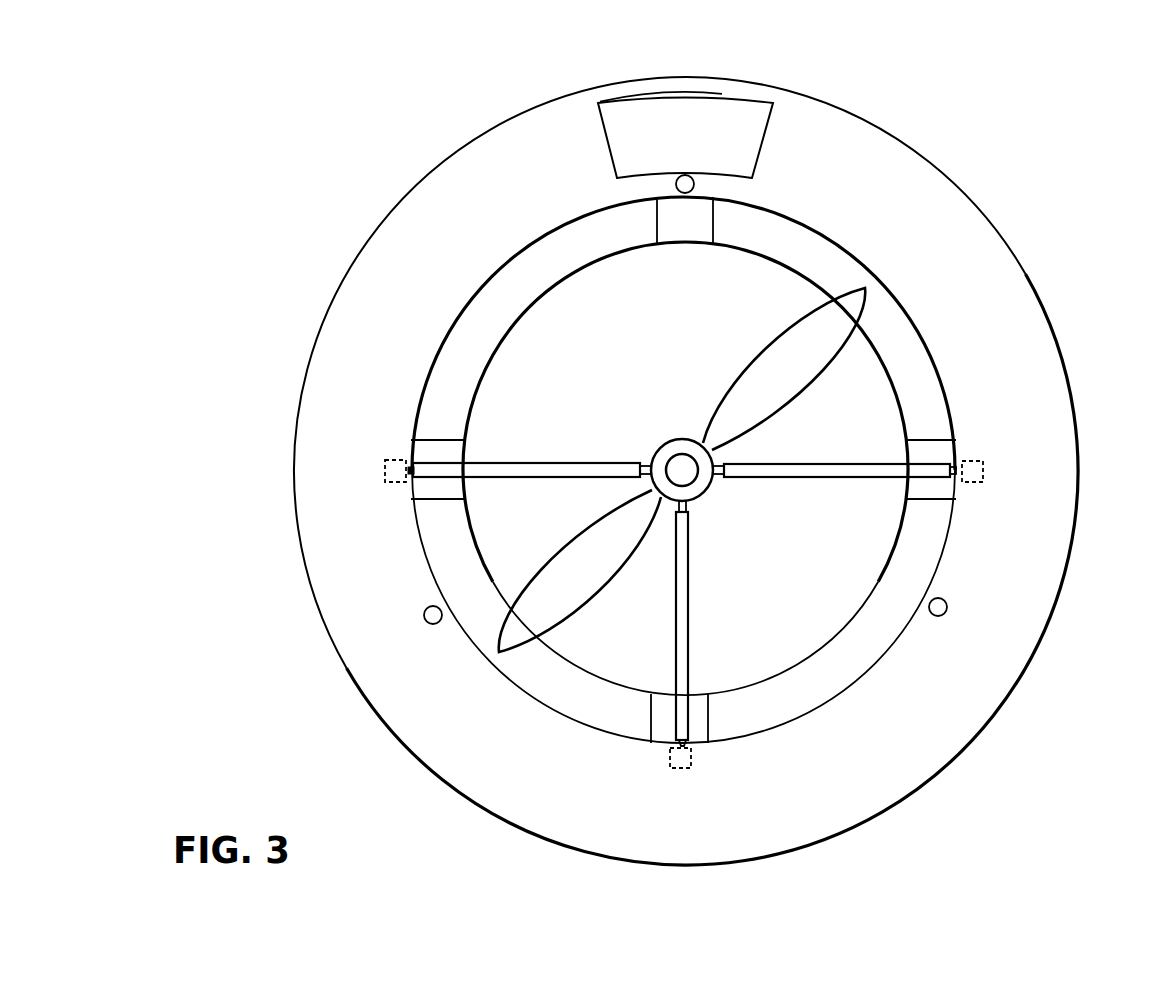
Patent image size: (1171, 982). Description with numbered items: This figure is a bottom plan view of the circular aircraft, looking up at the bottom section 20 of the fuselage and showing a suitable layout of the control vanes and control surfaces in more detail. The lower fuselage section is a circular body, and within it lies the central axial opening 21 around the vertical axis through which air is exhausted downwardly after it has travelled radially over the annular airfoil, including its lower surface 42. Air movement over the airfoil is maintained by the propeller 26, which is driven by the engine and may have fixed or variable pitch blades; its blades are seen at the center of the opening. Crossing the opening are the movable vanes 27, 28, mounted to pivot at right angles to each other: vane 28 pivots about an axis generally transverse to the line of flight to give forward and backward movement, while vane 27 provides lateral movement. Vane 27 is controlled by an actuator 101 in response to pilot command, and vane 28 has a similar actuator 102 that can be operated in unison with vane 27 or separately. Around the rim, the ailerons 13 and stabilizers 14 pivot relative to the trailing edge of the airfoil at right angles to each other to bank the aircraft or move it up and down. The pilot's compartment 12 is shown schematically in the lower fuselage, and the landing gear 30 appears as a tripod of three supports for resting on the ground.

The pilot's compartment 12 is at (737, 137).
The ailerons 13 is at (423, 488).
The stabilizers 14 is at (667, 230).
The bottom section 20 is at (293, 457).
The central axial opening 21 is at (792, 607).
The propeller 26 is at (773, 352).
The movable vane 27 is at (688, 592).
The movable vane 28 is at (532, 465).
The landing gear 30 is at (676, 185).
The lower surface 42 is at (460, 355).
The actuator 101 is at (692, 765).
The actuator 102 is at (395, 460).